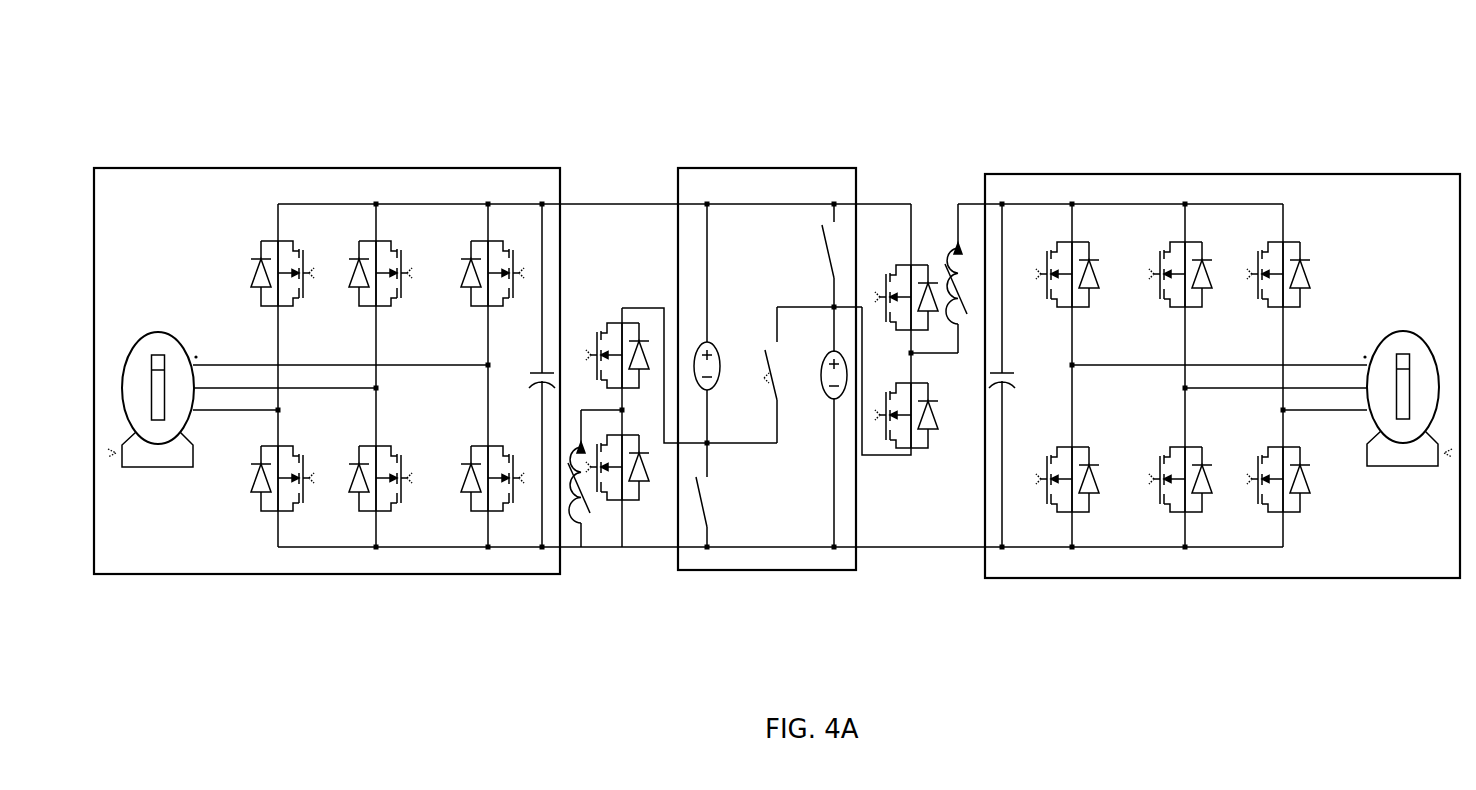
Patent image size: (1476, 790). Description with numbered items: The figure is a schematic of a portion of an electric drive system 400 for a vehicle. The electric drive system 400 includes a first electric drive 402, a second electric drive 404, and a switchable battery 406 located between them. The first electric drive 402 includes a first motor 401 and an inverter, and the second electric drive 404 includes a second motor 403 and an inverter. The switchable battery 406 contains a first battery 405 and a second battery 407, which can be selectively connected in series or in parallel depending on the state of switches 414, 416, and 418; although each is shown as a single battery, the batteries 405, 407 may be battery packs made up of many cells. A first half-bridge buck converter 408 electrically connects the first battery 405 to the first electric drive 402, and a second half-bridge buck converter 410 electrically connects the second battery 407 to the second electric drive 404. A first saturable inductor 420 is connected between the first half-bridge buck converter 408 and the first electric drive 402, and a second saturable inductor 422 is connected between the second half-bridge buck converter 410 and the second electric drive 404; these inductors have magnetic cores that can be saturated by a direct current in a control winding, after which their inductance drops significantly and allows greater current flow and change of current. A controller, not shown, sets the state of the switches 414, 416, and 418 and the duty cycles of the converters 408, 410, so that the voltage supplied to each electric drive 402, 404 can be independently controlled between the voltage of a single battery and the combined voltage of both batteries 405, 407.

The electric drive system 400 is at (242, 108).
The first motor 401 is at (158, 318).
The first electric drive 402 is at (375, 168).
The second motor 403 is at (1397, 320).
The second electric drive 404 is at (1338, 173).
The first battery 405 is at (717, 383).
The switchable battery 406 is at (774, 167).
The second battery 407 is at (823, 395).
The first half-bridge buck converter 408 is at (636, 520).
The second half-bridge buck converter 410 is at (921, 225).
The switch 414 is at (764, 342).
The switch 416 is at (716, 491).
The switch 418 is at (820, 243).
The first saturable inductor 420 is at (587, 522).
The second saturable inductor 422 is at (953, 241).